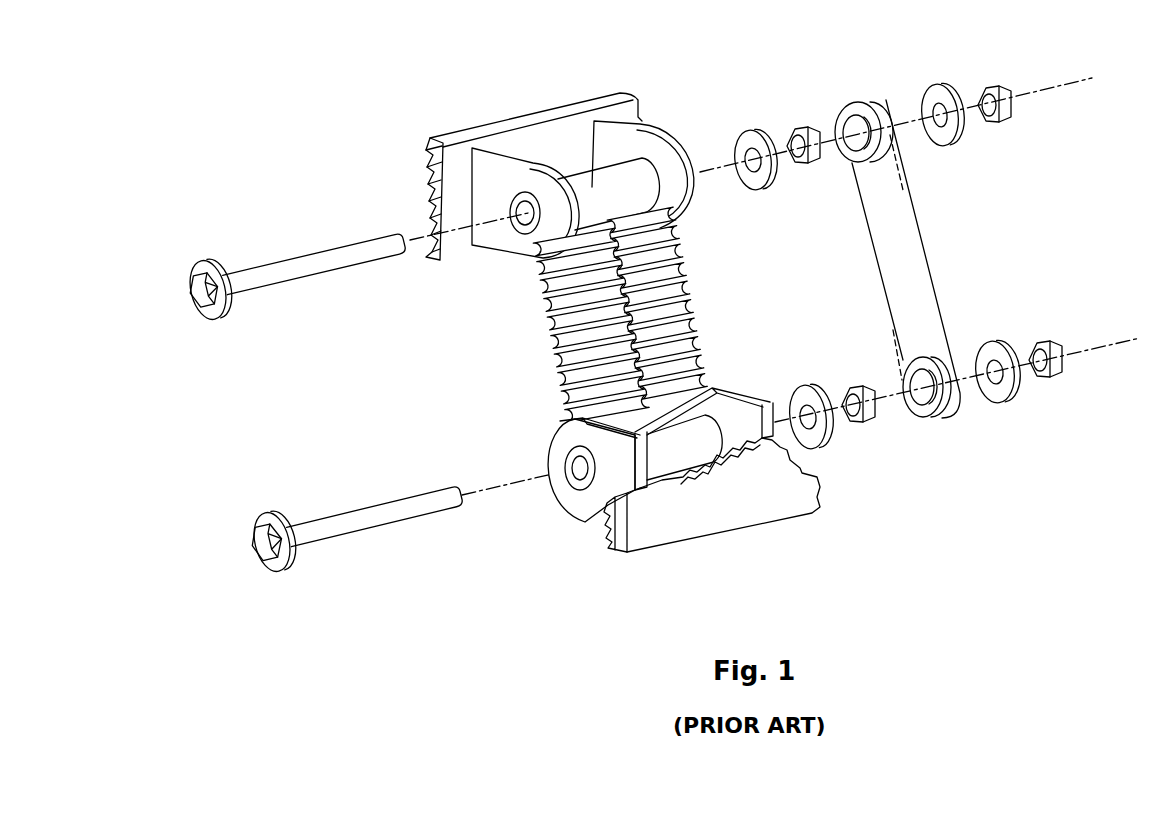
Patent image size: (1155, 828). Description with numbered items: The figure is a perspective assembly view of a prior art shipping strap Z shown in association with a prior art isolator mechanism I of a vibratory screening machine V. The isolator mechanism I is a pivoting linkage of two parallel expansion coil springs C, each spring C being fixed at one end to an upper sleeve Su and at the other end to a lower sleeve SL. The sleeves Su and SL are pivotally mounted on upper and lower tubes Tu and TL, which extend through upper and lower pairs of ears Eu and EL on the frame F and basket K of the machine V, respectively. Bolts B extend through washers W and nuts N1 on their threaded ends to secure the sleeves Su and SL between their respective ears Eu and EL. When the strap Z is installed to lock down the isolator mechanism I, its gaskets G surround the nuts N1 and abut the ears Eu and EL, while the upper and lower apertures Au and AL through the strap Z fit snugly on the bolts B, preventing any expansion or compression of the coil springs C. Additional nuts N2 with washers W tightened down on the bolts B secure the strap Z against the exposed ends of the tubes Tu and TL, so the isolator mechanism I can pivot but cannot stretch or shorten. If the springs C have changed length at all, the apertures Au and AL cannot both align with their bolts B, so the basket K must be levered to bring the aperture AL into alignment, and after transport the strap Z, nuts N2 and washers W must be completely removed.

The bolt B is at (315, 247).
The washer W is at (748, 130).
The frame F is at (465, 133).
The upper ears Eu is at (512, 155).
The upper sleeve Su is at (593, 190).
The upper tube Tu is at (516, 225).
The vibratory screening machine V is at (443, 285).
The isolator mechanism I is at (480, 353).
The expansion coil spring C is at (693, 283).
The lower ears EL is at (557, 497).
The lower tube TL is at (565, 465).
The lower sleeve SL is at (668, 447).
The basket K is at (730, 527).
The gasket G is at (837, 108).
The nut N1 is at (797, 127).
The additional nut N2 is at (997, 117).
The upper aperture Au is at (866, 164).
The lower aperture AL is at (938, 412).
The shipping strap Z is at (942, 276).